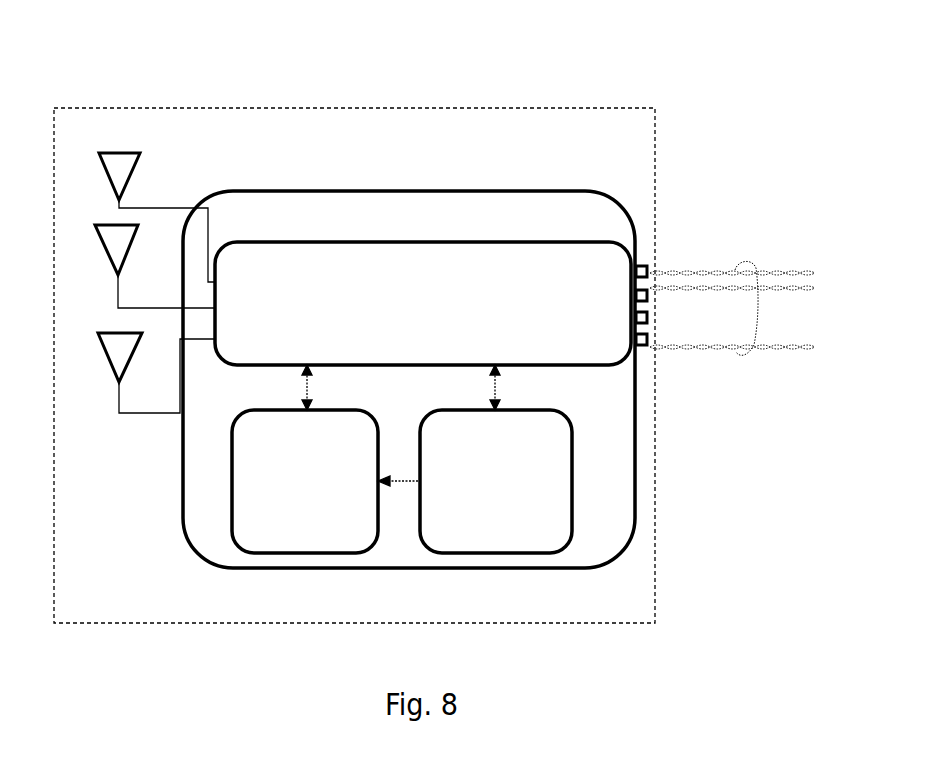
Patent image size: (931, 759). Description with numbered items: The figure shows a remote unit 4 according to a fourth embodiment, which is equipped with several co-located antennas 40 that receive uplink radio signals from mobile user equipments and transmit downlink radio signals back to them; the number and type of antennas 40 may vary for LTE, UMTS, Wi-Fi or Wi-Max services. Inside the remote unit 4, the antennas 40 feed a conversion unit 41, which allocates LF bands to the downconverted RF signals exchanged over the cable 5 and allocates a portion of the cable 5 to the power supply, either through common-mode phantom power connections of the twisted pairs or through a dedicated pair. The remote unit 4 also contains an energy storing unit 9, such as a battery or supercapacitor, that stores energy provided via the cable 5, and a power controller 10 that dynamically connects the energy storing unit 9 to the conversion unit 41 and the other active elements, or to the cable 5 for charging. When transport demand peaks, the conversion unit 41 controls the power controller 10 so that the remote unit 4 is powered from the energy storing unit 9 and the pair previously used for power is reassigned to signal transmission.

The remote unit 4 is at (519, 100).
The co-located antennas 40 is at (186, 147).
The conversion unit 41 is at (423, 303).
The energy storing unit 9 is at (305, 481).
The power controller 10 is at (496, 481).
The cable 5 is at (691, 242).